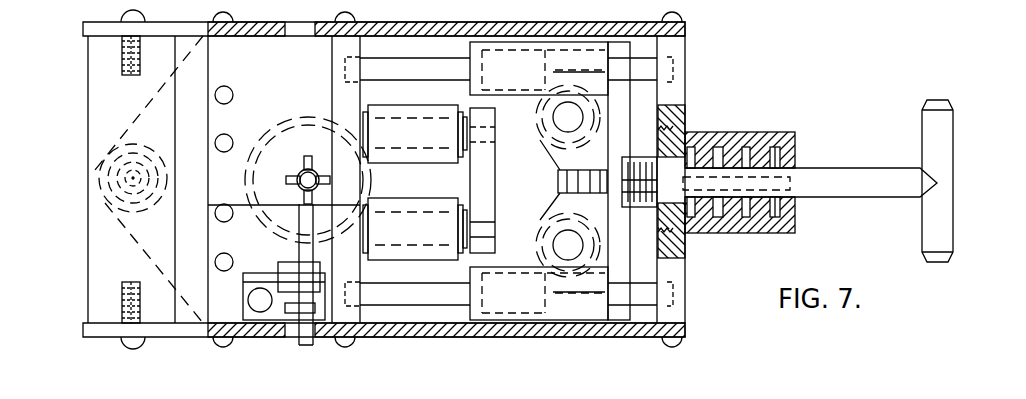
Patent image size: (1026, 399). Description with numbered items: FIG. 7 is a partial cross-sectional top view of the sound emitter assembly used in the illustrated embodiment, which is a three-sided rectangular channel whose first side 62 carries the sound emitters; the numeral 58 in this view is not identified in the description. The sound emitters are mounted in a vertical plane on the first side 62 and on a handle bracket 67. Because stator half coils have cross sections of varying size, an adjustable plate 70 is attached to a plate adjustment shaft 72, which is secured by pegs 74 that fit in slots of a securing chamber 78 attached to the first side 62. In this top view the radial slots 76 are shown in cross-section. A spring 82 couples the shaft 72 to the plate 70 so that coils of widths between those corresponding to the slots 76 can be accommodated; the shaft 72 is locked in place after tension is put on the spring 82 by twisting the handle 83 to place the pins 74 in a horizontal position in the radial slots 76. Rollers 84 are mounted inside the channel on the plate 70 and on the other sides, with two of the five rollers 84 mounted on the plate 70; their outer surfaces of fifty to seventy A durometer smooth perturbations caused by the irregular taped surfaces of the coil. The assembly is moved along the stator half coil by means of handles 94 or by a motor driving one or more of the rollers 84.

The frame 58 is at (429, 24).
The first side 62 is at (677, 48).
The handle bracket 67 is at (207, 72).
The adjustable plate 70 is at (620, 223).
The plate adjustment shaft 72 is at (882, 188).
The pegs 74 is at (800, 190).
The radial slots 76 is at (745, 147).
The securing chamber 78 is at (762, 138).
The spring 82 is at (661, 134).
The handle 83 is at (948, 148).
The rollers 84 is at (306, 116).
The handles 94 is at (84, 176).